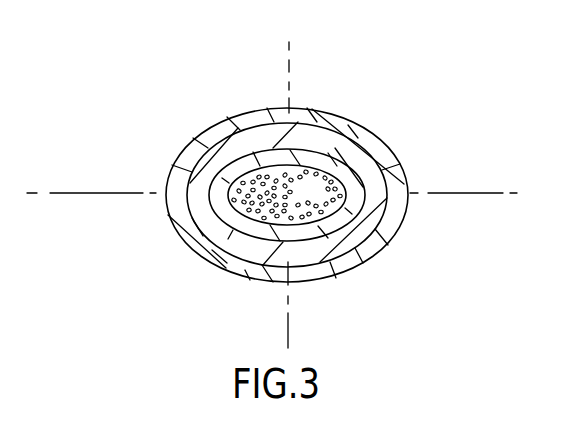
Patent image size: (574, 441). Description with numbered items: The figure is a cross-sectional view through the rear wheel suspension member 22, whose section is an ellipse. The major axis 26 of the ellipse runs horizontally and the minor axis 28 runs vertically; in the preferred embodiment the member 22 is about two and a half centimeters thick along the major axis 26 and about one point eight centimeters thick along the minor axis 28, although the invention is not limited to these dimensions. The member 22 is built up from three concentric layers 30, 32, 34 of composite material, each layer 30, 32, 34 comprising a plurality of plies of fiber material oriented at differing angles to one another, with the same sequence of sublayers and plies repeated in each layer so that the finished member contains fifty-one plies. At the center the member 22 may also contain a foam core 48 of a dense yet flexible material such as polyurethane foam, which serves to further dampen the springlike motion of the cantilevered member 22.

The rear wheel suspension member 22 is at (197, 137).
The major axis 26 is at (482, 195).
The minor axis 28 is at (303, 44).
The layer 30 is at (348, 180).
The layer 32 is at (348, 147).
The layer 34 is at (334, 121).
The foam core 48 is at (320, 199).